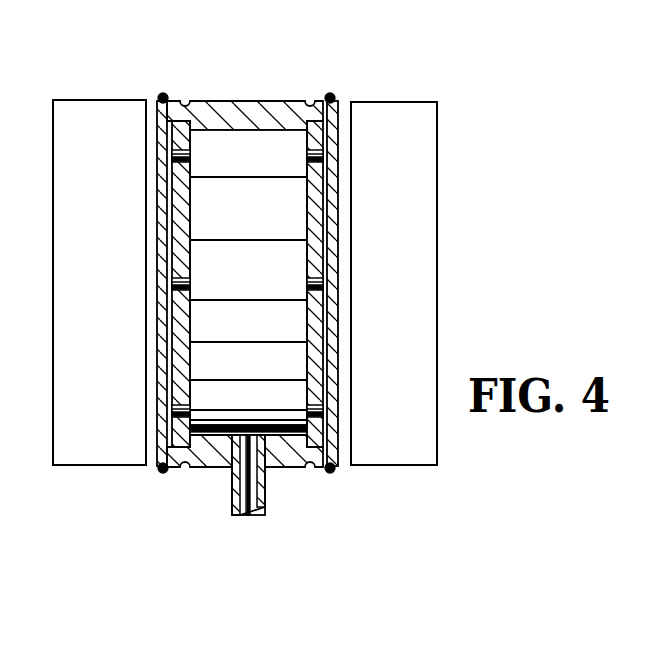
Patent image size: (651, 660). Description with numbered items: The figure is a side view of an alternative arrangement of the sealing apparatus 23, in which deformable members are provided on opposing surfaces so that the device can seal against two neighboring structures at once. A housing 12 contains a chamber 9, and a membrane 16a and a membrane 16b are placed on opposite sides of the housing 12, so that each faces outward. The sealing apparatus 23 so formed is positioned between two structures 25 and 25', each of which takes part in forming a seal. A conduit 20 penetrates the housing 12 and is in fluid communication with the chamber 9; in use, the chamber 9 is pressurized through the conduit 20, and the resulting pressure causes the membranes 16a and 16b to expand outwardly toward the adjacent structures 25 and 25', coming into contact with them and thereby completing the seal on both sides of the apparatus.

The chamber 9 is at (258, 225).
The housing 12 is at (210, 100).
The membrane 16a is at (157, 95).
The membrane 16b is at (343, 100).
The conduit 20 is at (233, 497).
The sealing apparatus 23 is at (287, 60).
The structure 25 is at (99, 282).
The structure 25' is at (394, 283).